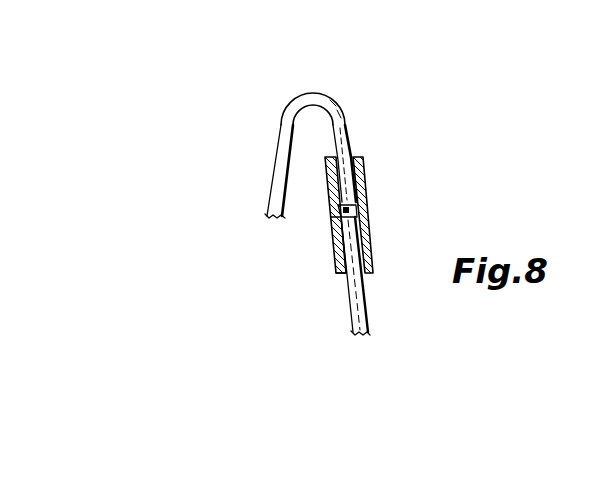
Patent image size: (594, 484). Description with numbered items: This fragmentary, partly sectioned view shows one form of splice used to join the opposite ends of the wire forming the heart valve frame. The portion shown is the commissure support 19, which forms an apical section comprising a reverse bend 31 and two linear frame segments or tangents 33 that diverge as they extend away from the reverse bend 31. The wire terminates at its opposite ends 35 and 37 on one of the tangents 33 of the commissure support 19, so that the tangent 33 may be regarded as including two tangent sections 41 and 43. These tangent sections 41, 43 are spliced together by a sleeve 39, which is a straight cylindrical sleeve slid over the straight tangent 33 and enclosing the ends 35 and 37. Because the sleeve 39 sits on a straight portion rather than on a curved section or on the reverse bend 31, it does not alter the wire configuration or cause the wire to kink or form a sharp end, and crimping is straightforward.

The commissure support 19 is at (343, 89).
The reverse bend 31 is at (312, 97).
The tangents 33 is at (273, 170).
The tangent section 41 is at (348, 163).
The sleeve 39 is at (365, 243).
The wire end 37 is at (332, 217).
The wire end 35 is at (355, 208).
The tangent section 43 is at (347, 255).